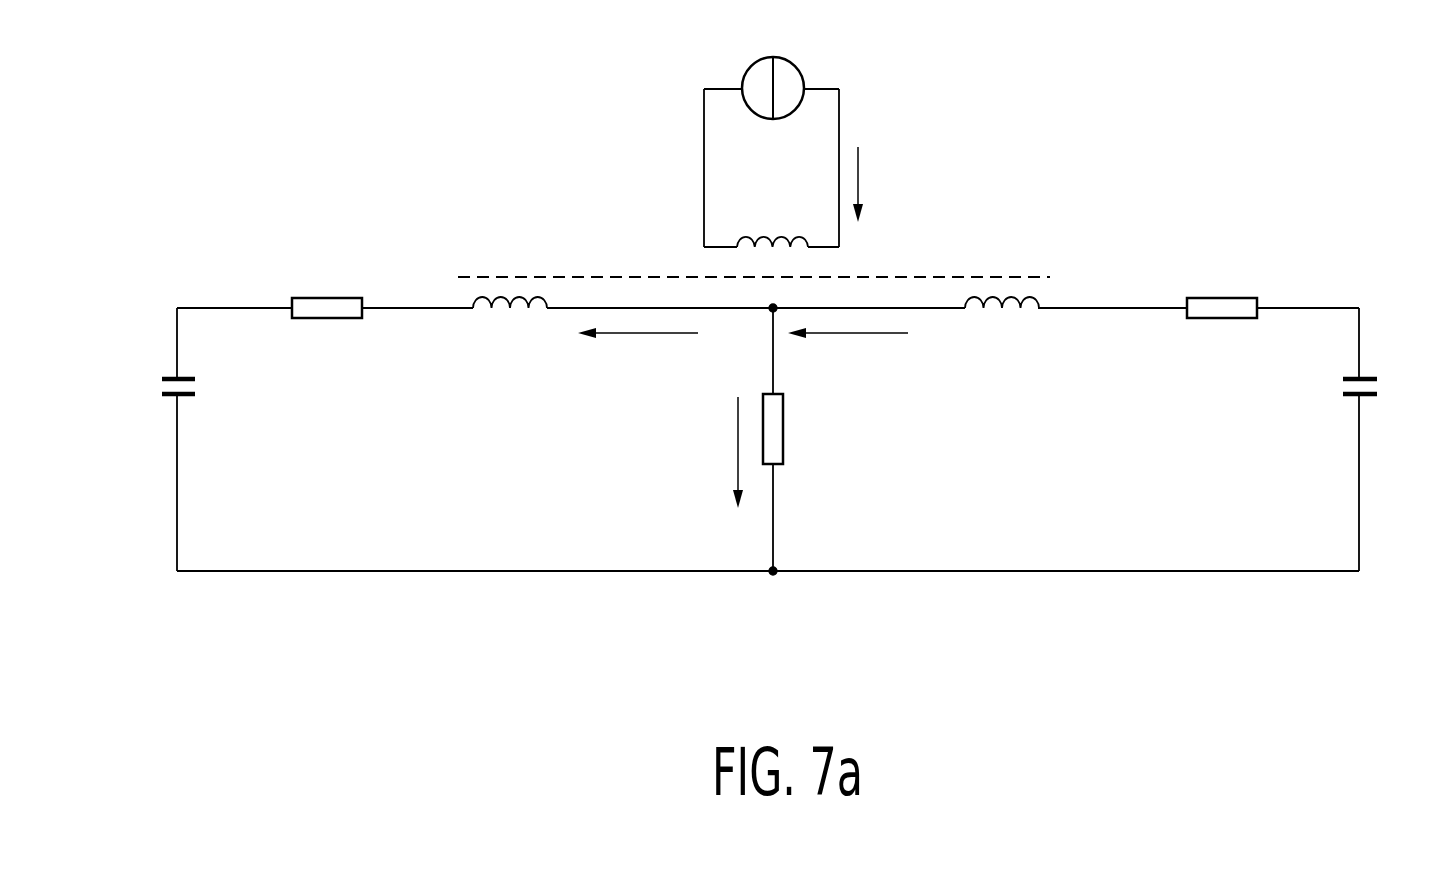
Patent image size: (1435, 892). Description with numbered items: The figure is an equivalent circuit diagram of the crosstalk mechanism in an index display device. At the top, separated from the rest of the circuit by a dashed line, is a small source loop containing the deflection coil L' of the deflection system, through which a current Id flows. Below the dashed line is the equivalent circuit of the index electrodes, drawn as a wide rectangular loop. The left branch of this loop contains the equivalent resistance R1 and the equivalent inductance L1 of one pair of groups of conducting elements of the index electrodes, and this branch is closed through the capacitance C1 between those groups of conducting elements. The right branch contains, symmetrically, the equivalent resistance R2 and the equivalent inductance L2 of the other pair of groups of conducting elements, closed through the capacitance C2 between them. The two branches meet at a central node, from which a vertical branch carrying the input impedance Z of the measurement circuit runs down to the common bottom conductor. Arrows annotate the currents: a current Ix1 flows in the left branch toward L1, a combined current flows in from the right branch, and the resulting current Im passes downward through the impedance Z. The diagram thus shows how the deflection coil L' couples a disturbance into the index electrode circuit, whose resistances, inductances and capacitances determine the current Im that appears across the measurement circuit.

The equivalent resistance of the groups of conducting elements 61 and 72 R1 is at (327, 325).
The equivalent resistance of the groups of conducting elements 62 and 71 R2 is at (1222, 325).
The equivalent inductance of the groups of conducting elements 61 and 72 L1 is at (510, 321).
The equivalent inductance of the groups of conducting elements 62 and 71 L2 is at (1002, 321).
The capacitance between the groups of conducting elements 61 and 72 C1 is at (157, 388).
The capacitance between the groups of conducting elements 62 and 71 C2 is at (1385, 388).
The input impedance of the measurement circuit Z is at (788, 429).
The deflection coil of the deflection system L' is at (772, 225).
The drive current Id is at (868, 184).
The current Ix1 is at (638, 348).
The current Im is at (720, 452).